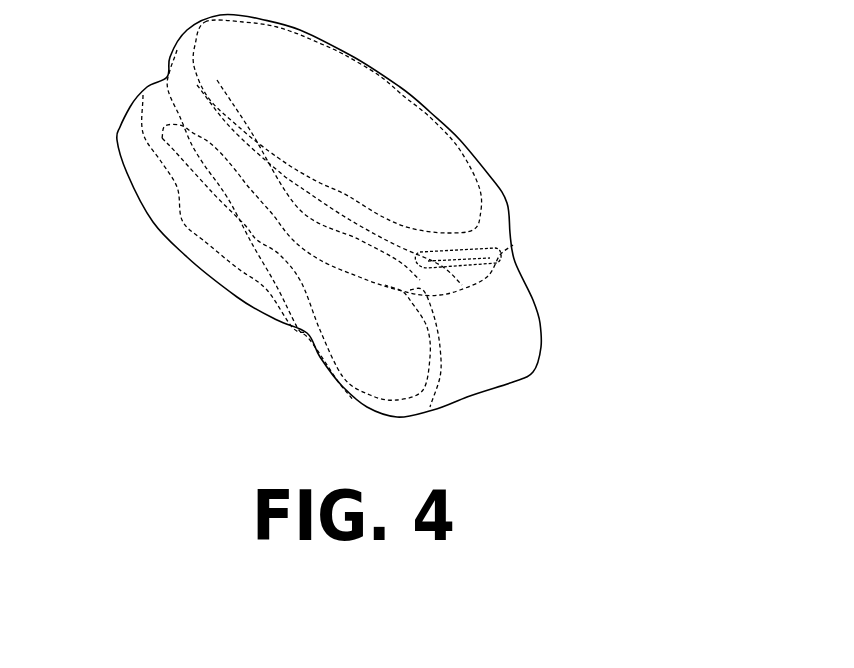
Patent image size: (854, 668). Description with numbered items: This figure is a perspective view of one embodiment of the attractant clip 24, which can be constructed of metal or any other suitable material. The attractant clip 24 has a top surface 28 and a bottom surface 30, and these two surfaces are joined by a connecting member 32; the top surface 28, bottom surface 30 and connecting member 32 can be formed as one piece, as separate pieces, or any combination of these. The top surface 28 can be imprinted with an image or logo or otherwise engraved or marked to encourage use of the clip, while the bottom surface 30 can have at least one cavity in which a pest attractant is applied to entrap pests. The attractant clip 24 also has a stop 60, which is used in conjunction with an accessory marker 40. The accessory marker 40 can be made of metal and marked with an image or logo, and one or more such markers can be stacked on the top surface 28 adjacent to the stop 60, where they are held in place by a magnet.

The attractant clip 24 is at (558, 91).
The top surface 28 is at (490, 220).
The bottom surface 30 is at (187, 257).
The connecting member 32 is at (507, 347).
The accessory marker 40 is at (375, 107).
The stop 60 is at (478, 250).